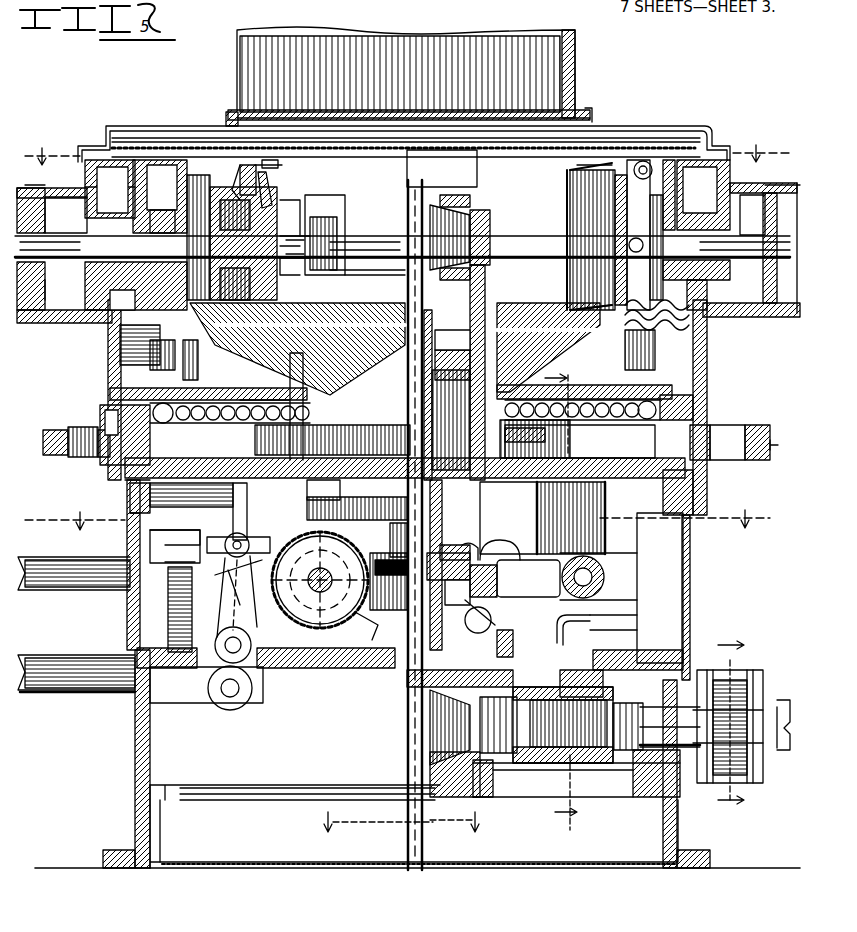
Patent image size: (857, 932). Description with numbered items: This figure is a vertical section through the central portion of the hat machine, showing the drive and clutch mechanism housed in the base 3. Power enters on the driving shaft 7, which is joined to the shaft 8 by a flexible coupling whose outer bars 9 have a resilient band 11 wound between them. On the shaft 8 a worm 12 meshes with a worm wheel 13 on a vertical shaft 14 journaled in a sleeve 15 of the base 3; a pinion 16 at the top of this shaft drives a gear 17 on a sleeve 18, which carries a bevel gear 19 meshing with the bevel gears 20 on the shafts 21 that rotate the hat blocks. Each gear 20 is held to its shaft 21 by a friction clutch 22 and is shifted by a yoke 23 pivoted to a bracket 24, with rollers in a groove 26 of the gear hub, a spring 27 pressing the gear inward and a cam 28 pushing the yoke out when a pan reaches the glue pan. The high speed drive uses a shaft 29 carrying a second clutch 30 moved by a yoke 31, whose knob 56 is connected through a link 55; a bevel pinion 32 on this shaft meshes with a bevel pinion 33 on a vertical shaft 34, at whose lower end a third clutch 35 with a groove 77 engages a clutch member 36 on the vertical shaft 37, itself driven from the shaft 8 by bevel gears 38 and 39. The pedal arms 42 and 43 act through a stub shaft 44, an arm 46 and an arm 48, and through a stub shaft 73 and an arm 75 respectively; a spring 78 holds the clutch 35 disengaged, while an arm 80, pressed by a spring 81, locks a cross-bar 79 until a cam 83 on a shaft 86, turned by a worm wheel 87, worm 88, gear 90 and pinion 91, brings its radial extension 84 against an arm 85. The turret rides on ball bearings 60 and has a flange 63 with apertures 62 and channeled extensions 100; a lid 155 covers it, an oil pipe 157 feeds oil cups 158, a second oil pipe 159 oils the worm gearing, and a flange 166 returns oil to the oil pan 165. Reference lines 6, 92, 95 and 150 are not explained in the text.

The base 3 is at (135, 755).
The section line 6- 6 is at (49, 158).
The driving shaft 7 is at (783, 740).
The shaft 8 is at (655, 766).
The bars 9 is at (768, 700).
The band 11 is at (728, 726).
The worm 12 is at (590, 753).
The worm wheel 13 is at (573, 608).
The vertical shaft 14 is at (401, 824).
The sleeve 15 is at (620, 618).
The pinion 16 is at (586, 440).
The gear 17 is at (350, 440).
The sleeve 18 is at (462, 440).
The bevel gear 19 is at (345, 318).
The bevel gear 20 is at (212, 185).
The shaft 21 is at (70, 247).
The friction clutch 22 is at (250, 193).
The yoke 23 is at (97, 213).
The bracket 24 is at (160, 200).
The groove 26 is at (180, 200).
The spring 27 is at (155, 362).
The cam 28 is at (190, 366).
The shaft 29 is at (293, 246).
The second clutch 30 is at (278, 213).
The yoke 31 is at (285, 170).
The bevel pinion 32 is at (455, 232).
The bevel pinion 33 is at (400, 272).
The shaft 34 is at (445, 372).
The third clutch 35 is at (448, 579).
The clutch member 36 is at (493, 613).
The vertical shaft 37 is at (495, 585).
The bevel gear 38 is at (430, 700).
The bevel gear 39 is at (430, 753).
The arm 42 is at (53, 678).
The arm 43 is at (49, 572).
The stub shaft 44 is at (222, 690).
The arm 46 is at (257, 622).
The arm 48 is at (570, 512).
The link 55 is at (283, 173).
The knob 56 is at (235, 122).
The ball bearings 60 is at (243, 408).
The apertures 62 is at (80, 455).
The flange 63 is at (779, 451).
The stub shaft 73 is at (606, 585).
The arm 75 is at (506, 560).
The groove 77 is at (467, 544).
The spring 78 is at (170, 605).
The cross-bar 79 is at (242, 540).
The arm 80 is at (232, 520).
The spring 81 is at (135, 482).
The cam 83 is at (283, 674).
The radial extension 84 is at (385, 556).
The arm 85 is at (250, 548).
The shaft 86 is at (320, 580).
The worm wheel 87 is at (314, 581).
The worm 88 is at (375, 628).
The gear 90 is at (340, 510).
The pinion 91 is at (455, 560).
The link 92 is at (238, 582).
The link 95 is at (232, 574).
The channeled extensions 100 is at (411, 177).
The cylinder 150 is at (578, 62).
The lid 155 is at (160, 146).
The oil pipe 157 is at (178, 130).
The oil cups 158 is at (112, 185).
The second oil pipe 159 is at (610, 637).
The oil pan 165 is at (343, 875).
The flange 166 is at (165, 790).